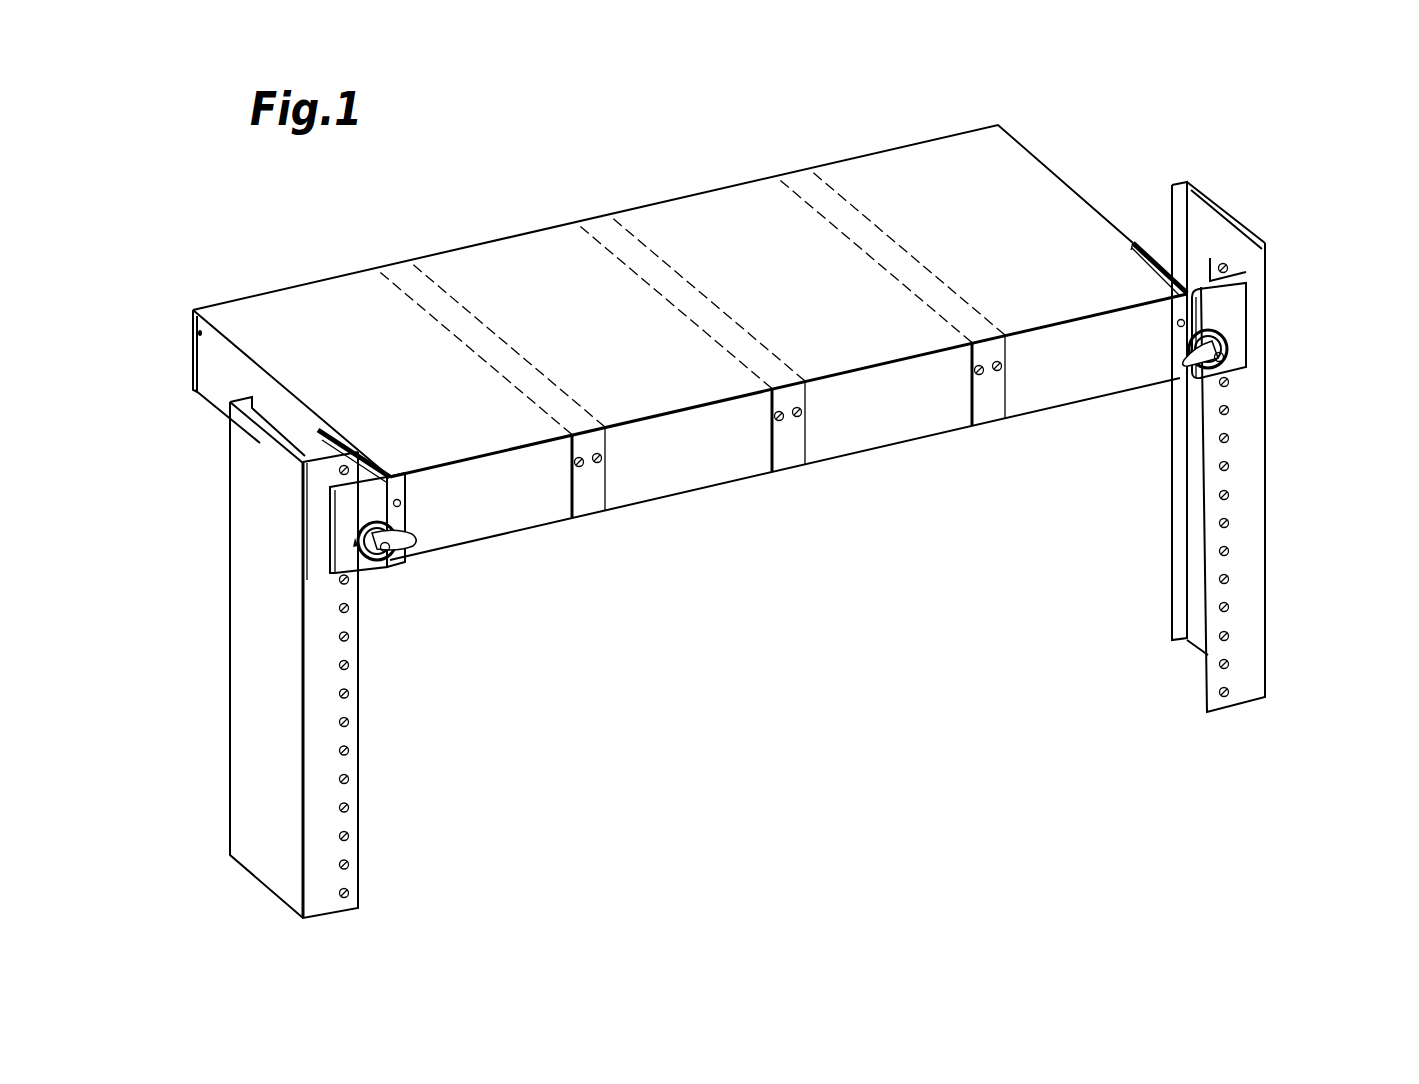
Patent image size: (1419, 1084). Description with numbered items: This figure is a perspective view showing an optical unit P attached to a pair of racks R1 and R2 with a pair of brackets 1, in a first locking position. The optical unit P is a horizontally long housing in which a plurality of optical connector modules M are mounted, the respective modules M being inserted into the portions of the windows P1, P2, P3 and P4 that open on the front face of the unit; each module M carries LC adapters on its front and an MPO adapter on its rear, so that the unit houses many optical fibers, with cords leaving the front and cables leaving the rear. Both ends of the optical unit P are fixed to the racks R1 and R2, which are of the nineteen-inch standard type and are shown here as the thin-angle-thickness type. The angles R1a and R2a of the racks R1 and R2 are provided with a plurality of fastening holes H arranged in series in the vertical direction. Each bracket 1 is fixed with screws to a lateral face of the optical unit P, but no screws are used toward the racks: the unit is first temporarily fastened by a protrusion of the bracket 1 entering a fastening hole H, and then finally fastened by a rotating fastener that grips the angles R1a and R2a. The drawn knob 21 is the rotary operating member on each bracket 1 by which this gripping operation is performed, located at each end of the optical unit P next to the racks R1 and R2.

The bracket 1 is at (1146, 237).
The fastening knob 21 is at (407, 530).
The optical unit P is at (446, 273).
The window P1 is at (535, 510).
The window P2 is at (703, 472).
The window P3 is at (900, 440).
The window P4 is at (1035, 405).
The optical connector module M is at (262, 318).
The fastening hole H is at (349, 665).
The rack R1 is at (242, 465).
The angle R1a is at (320, 477).
The rack R2 is at (1247, 572).
The angle R2a is at (1242, 263).